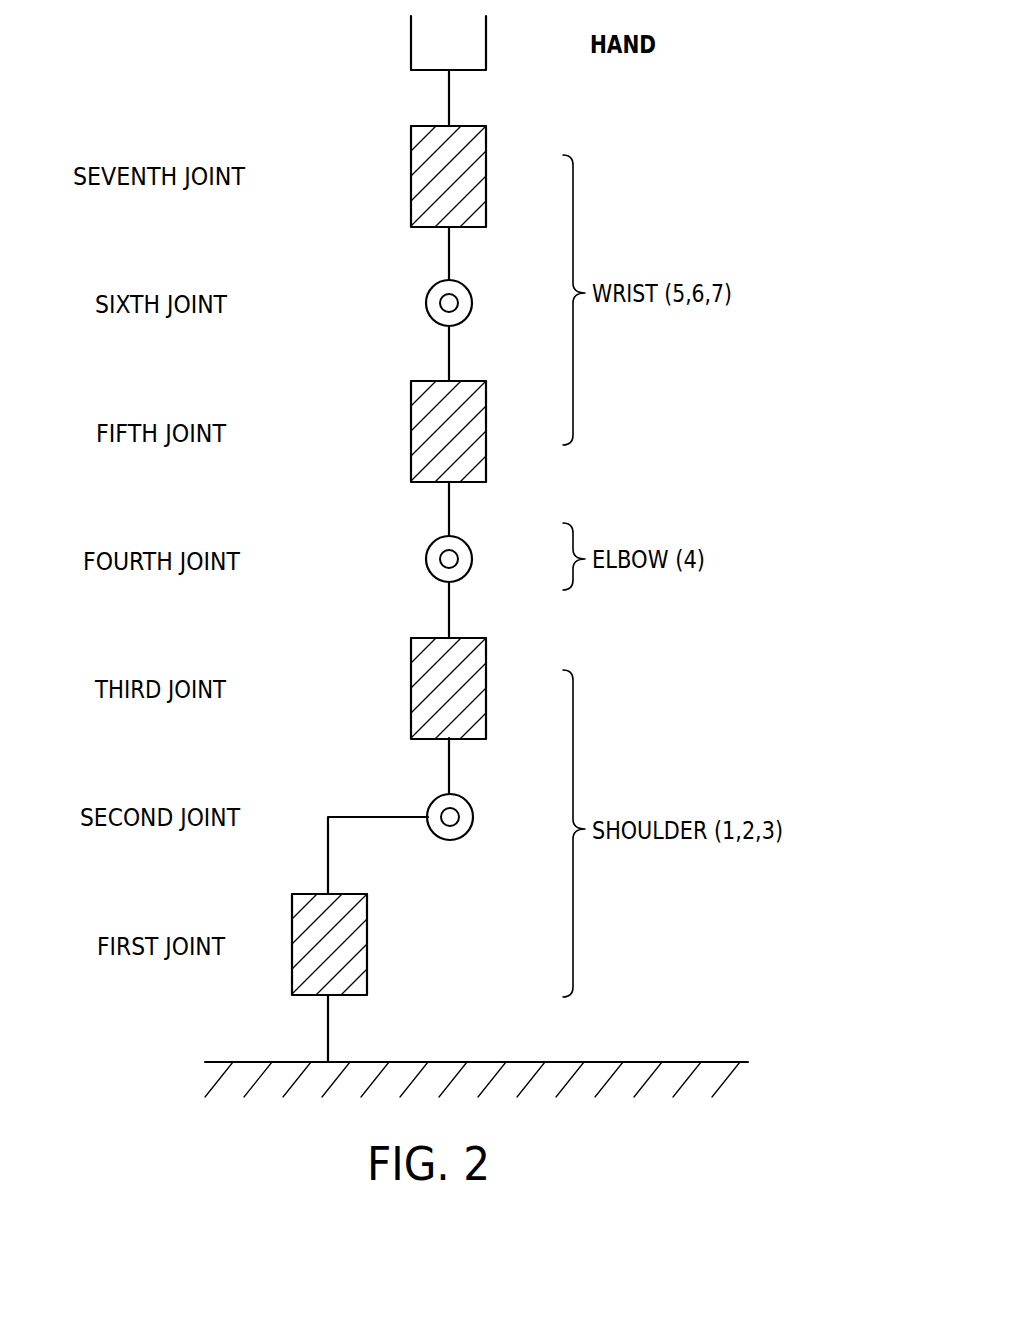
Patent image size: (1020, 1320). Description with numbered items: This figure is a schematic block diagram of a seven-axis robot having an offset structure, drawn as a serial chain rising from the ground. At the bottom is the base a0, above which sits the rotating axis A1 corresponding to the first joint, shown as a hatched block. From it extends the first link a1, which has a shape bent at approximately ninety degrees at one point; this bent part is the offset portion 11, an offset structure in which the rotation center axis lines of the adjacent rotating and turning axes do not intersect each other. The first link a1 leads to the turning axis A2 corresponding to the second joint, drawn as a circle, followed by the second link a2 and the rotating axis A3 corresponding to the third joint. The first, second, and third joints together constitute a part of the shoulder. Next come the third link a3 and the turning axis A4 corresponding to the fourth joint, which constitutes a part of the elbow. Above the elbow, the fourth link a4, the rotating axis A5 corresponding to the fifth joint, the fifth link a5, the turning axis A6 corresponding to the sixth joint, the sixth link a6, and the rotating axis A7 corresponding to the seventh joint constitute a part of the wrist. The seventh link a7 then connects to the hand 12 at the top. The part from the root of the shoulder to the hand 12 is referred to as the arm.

The hand 12 is at (486, 41).
The offset portion 11 is at (337, 826).
The rotating axis A7 is at (486, 168).
The turning axis A6 is at (472, 300).
The rotating axis A5 is at (486, 422).
The turning axis A4 is at (472, 556).
The rotating axis A3 is at (486, 692).
The turning axis A2 is at (473, 815).
The rotating axis A1 is at (367, 948).
The seventh link a7 is at (449, 97).
The sixth link a6 is at (449, 254).
The fifth link a5 is at (449, 352).
The fourth link a4 is at (449, 508).
The third link a3 is at (449, 605).
The second link a2 is at (449, 769).
The first link a1 is at (328, 858).
The base a0 is at (328, 1027).